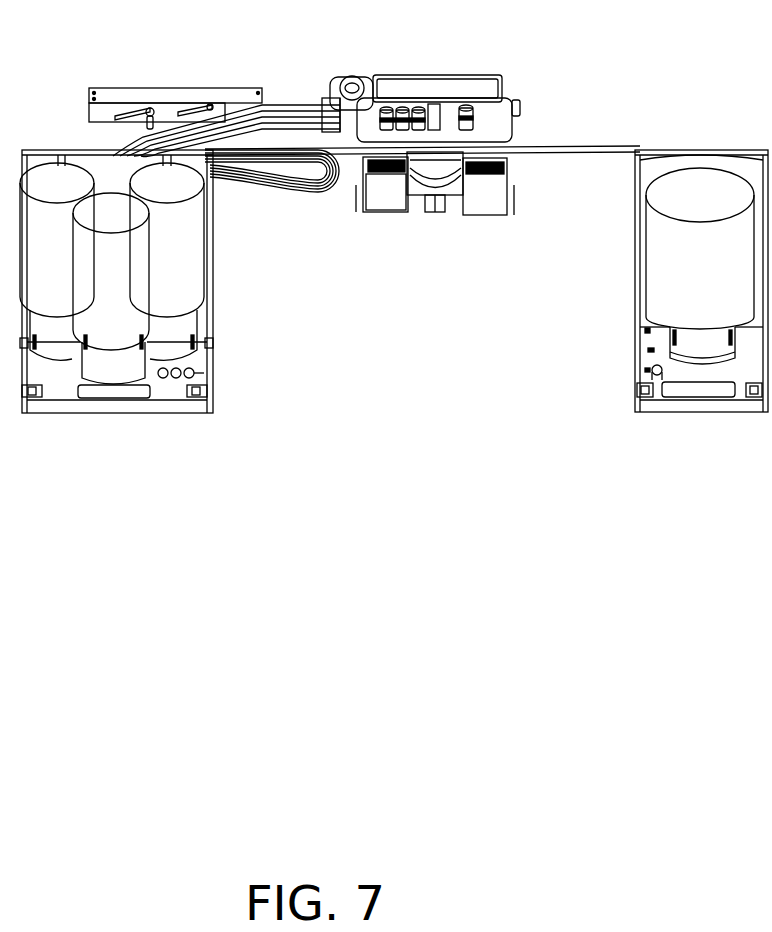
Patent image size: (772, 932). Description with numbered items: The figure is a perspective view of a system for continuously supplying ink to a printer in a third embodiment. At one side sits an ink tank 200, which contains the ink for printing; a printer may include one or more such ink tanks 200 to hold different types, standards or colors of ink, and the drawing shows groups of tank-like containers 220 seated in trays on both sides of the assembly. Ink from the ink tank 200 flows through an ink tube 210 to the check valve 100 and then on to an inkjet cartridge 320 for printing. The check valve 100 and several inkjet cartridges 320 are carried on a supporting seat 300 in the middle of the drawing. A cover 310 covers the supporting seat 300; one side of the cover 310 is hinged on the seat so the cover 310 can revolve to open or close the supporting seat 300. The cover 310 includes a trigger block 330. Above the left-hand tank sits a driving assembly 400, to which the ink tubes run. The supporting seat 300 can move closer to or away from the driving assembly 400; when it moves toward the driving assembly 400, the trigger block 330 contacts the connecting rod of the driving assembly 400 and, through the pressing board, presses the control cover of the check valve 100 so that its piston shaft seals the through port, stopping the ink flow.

The check valve 100 is at (478, 103).
The ink tank 200 is at (655, 317).
The ink tube 210 is at (257, 180).
The containers 220 is at (167, 238).
The supporting seat 300 is at (436, 220).
The cover 310 is at (455, 87).
The inkjet cartridge 320 is at (402, 200).
The trigger block 330 is at (387, 103).
The driving assembly 400 is at (123, 88).